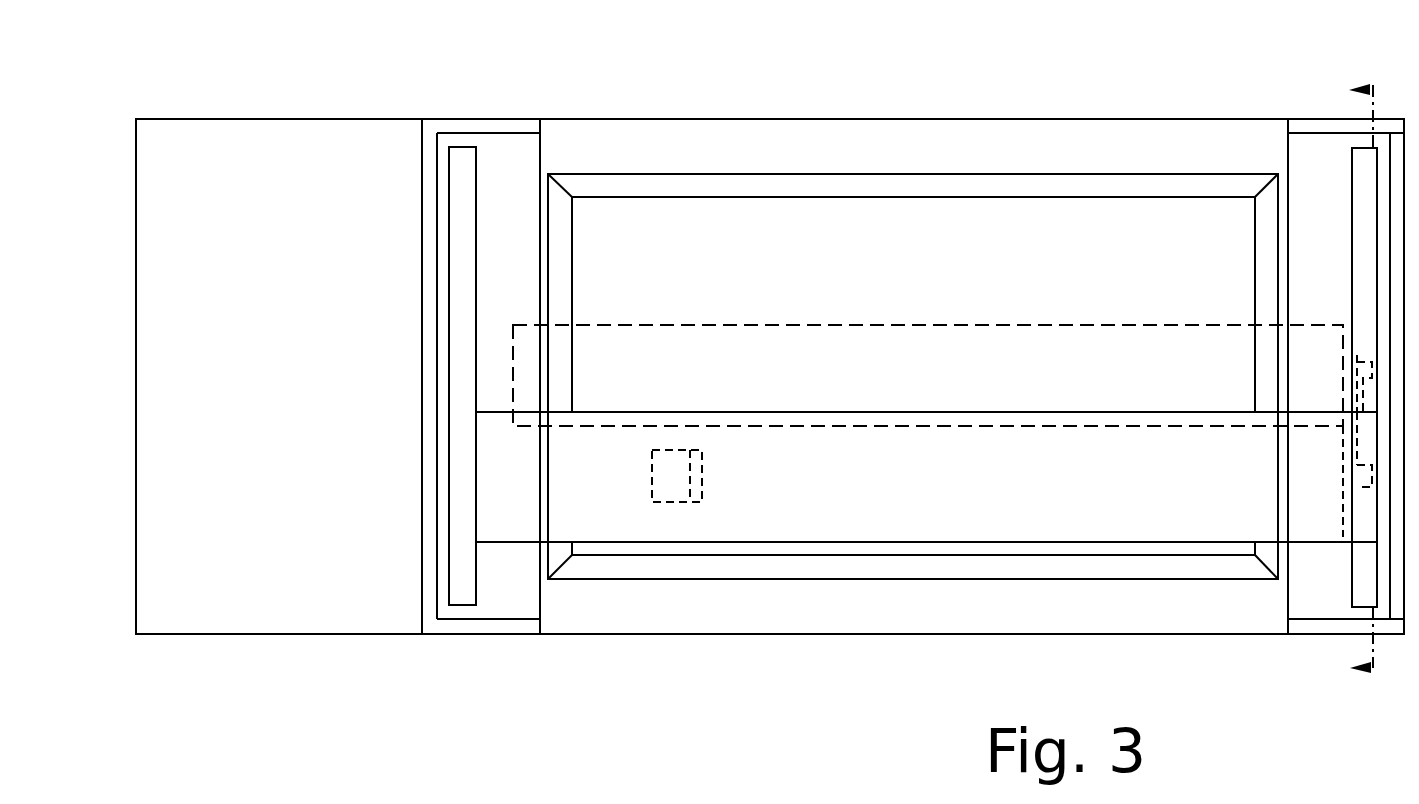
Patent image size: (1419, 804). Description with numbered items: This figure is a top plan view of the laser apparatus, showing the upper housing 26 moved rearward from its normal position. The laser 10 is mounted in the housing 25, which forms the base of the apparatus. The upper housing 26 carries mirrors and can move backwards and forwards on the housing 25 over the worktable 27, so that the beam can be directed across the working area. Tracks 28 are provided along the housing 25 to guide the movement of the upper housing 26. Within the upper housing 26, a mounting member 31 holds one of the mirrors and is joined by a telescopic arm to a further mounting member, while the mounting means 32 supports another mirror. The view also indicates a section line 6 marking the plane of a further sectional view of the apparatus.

The section line VI-VI 6 is at (1357, 163).
The workpiece 10 is at (713, 325).
The base housing 25 is at (242, 634).
The cross bar 26 is at (817, 542).
The frame 27 is at (617, 173).
The guide slot 28 is at (460, 176).
The clamp 31 is at (1350, 497).
The sensor 32 is at (667, 502).